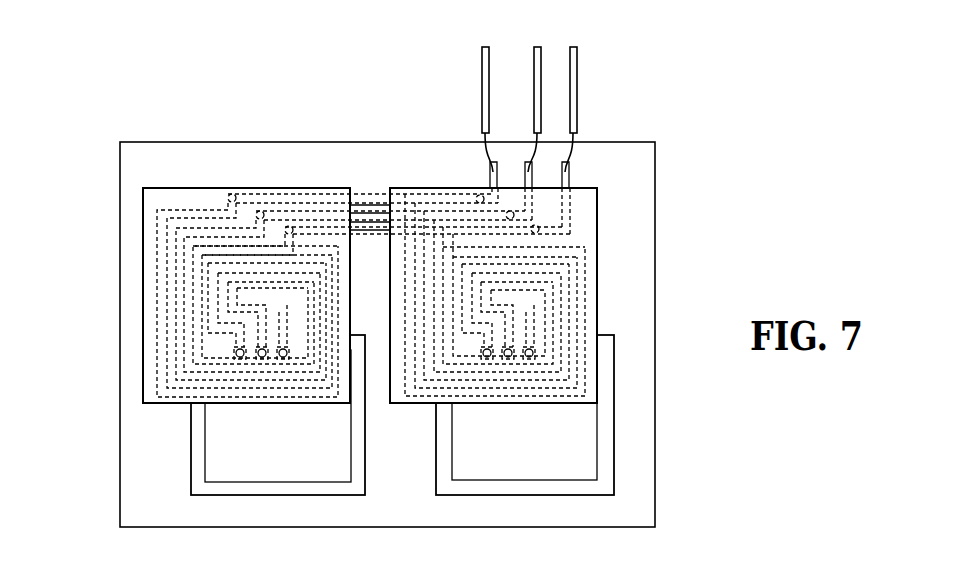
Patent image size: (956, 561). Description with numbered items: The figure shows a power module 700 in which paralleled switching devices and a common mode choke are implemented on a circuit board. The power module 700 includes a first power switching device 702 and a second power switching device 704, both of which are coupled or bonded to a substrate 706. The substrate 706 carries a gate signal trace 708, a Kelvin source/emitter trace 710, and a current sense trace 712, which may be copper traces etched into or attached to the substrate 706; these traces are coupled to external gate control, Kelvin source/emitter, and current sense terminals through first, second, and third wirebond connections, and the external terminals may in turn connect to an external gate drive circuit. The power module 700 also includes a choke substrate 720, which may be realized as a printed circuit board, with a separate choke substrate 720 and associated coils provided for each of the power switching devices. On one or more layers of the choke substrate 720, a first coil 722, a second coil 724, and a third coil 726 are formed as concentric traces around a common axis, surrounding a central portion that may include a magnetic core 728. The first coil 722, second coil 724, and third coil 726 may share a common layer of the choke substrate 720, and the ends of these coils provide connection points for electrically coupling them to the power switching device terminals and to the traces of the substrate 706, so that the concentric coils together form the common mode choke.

The power module 700 is at (658, 67).
The first power switching device 702 is at (538, 452).
The second power switching device 704 is at (293, 452).
The substrate 706 is at (119, 273).
The gate signal trace 708 is at (360, 198).
The Kelvin source/emitter trace 710 is at (370, 213).
The current sense trace 712 is at (382, 230).
The choke substrate 720 is at (252, 188).
The first coil 722 is at (157, 220).
The second coil 724 is at (173, 252).
The third coil 726 is at (190, 272).
The magnetic core 728 is at (240, 297).